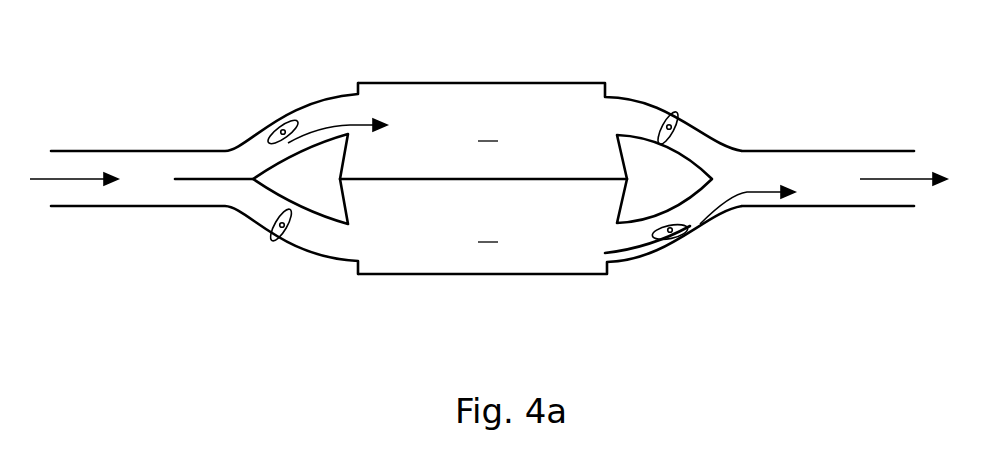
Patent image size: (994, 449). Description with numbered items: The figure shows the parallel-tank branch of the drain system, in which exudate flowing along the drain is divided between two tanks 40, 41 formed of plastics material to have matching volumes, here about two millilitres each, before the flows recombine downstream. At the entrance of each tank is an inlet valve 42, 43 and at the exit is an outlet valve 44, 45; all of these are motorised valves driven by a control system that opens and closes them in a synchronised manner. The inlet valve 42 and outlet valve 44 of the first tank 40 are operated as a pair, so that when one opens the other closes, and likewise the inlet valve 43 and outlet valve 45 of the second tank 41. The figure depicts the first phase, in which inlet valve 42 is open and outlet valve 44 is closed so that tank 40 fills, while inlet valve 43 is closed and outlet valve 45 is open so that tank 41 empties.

The tank 40 is at (530, 105).
The tank 41 is at (548, 252).
The inlet valve 42 is at (294, 122).
The inlet valve 43 is at (272, 238).
The outlet valve 44 is at (675, 112).
The outlet valve 45 is at (677, 228).